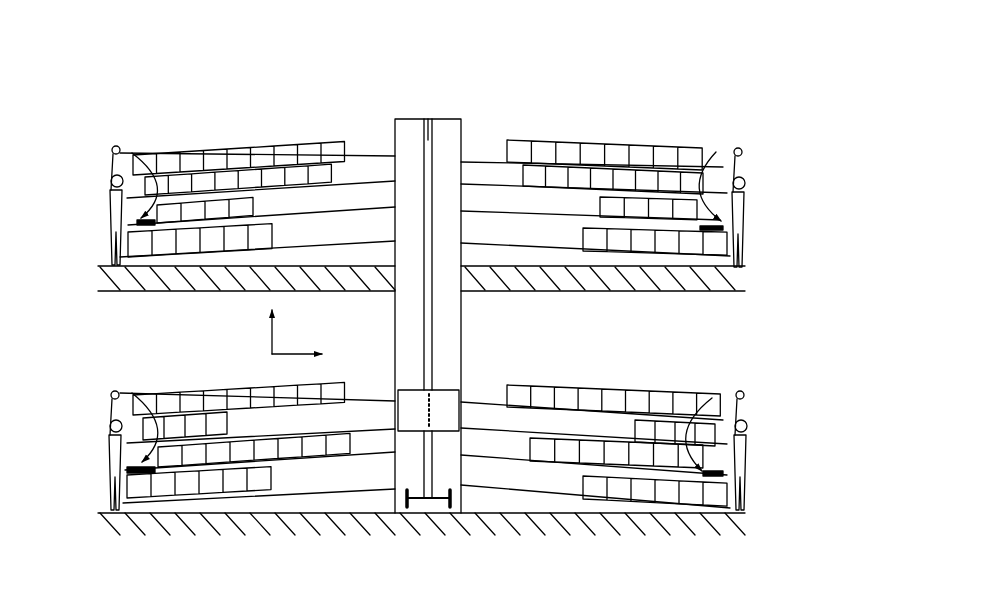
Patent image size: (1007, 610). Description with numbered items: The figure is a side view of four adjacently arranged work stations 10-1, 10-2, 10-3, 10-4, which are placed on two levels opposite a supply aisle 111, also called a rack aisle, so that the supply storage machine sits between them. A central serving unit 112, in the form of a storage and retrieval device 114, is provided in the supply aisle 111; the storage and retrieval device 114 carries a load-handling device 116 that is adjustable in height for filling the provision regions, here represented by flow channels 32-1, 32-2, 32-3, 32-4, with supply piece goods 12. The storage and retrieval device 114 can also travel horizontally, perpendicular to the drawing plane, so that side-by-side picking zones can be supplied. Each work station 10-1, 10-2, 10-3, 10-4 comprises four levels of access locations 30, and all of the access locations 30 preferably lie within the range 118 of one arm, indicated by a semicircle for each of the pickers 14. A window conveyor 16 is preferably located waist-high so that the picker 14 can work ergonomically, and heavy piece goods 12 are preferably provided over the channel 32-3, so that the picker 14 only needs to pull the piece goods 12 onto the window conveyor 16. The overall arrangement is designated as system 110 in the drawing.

The work station 10-1 is at (96, 184).
The work station 10-2 is at (95, 463).
The work station 10-3 is at (749, 479).
The work station 10-4 is at (749, 222).
The piece goods 12 is at (617, 197).
The picker 14 is at (111, 437).
The window conveyor 16 is at (109, 200).
The access location 30 is at (712, 187).
The flow channel 32-1 is at (492, 158).
The flow channel 32-2 is at (492, 181).
The flow channel 32-3 is at (492, 209).
The flow channel 32-4 is at (492, 237).
The storage system 110 is at (558, 106).
The supply aisle 111 is at (432, 102).
The central serving unit 112 is at (406, 116).
The storage and retrieval device 114 is at (437, 325).
The load-handling device 116 is at (448, 388).
The range of one arm 118 is at (120, 392).